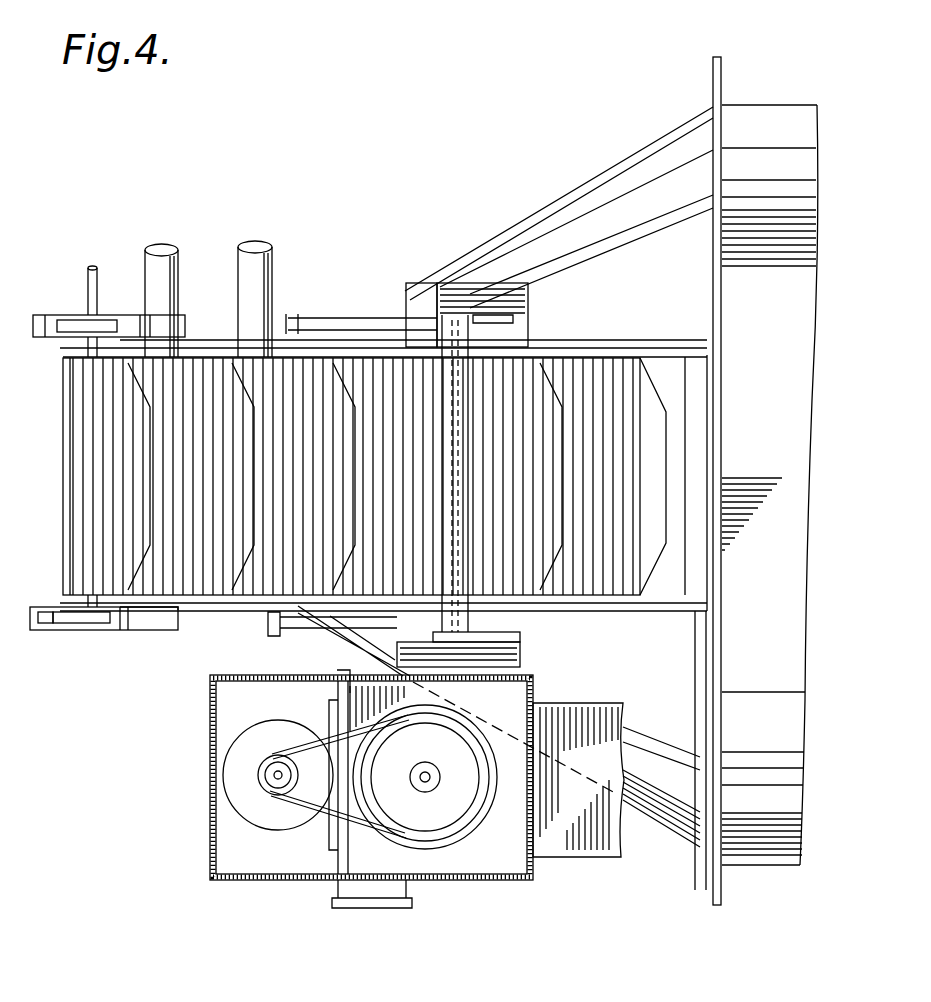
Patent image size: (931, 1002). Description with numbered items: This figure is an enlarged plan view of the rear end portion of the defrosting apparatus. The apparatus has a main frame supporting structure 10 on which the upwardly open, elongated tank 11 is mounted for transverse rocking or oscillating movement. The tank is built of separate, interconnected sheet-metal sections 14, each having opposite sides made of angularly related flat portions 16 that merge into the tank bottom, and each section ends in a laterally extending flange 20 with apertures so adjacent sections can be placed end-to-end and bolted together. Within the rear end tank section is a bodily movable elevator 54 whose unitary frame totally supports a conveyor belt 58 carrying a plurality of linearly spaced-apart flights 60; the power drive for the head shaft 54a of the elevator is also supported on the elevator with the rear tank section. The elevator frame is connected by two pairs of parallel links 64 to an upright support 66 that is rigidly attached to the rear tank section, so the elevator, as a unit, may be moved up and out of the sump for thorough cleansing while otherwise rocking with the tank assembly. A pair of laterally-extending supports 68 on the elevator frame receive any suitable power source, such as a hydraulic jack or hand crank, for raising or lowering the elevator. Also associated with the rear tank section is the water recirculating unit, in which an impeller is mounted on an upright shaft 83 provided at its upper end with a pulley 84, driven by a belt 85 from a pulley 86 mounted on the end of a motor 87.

The main frame supporting structure 10 is at (40, 448).
The tank 11 is at (774, 838).
The tank sections 14 is at (792, 118).
The angularly related flat portions 16 is at (737, 112).
The laterally extending flange 20 is at (712, 126).
The elevator 54 is at (58, 544).
The head shaft 54a is at (88, 285).
The conveyor belt 58 is at (298, 383).
The flights 60 is at (650, 392).
The parallel links 64 is at (340, 322).
The upright support 66 is at (492, 313).
The laterally-extending supports 68 is at (246, 267).
The upright shaft 83 is at (425, 772).
The pulley 84 is at (446, 808).
The belt 85 is at (358, 806).
The pulley 86 is at (312, 776).
The motor 87 is at (268, 724).